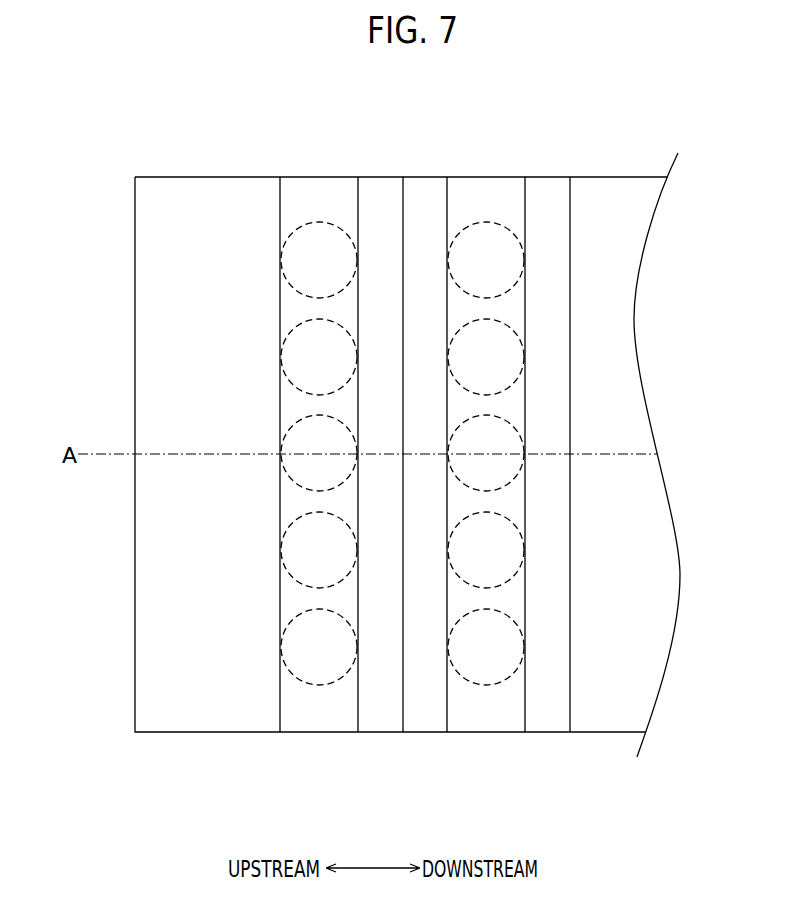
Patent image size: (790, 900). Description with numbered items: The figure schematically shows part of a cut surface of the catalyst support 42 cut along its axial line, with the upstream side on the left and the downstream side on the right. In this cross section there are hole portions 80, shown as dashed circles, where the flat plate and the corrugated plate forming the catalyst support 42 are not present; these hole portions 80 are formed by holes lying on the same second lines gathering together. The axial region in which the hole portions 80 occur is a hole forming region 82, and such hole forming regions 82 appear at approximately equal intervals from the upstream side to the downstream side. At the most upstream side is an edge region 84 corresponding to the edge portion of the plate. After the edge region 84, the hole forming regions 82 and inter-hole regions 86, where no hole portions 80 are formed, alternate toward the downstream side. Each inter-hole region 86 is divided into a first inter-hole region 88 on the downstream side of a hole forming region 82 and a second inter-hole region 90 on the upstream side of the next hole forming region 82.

The catalyst support 42 is at (277, 114).
The hole portions 80 is at (316, 222).
The hole forming region 82 is at (318, 735).
The edge region 84 is at (212, 735).
The inter-hole region 86 is at (442, 793).
The first inter-hole region 88 is at (387, 735).
The second inter-hole region 90 is at (428, 735).